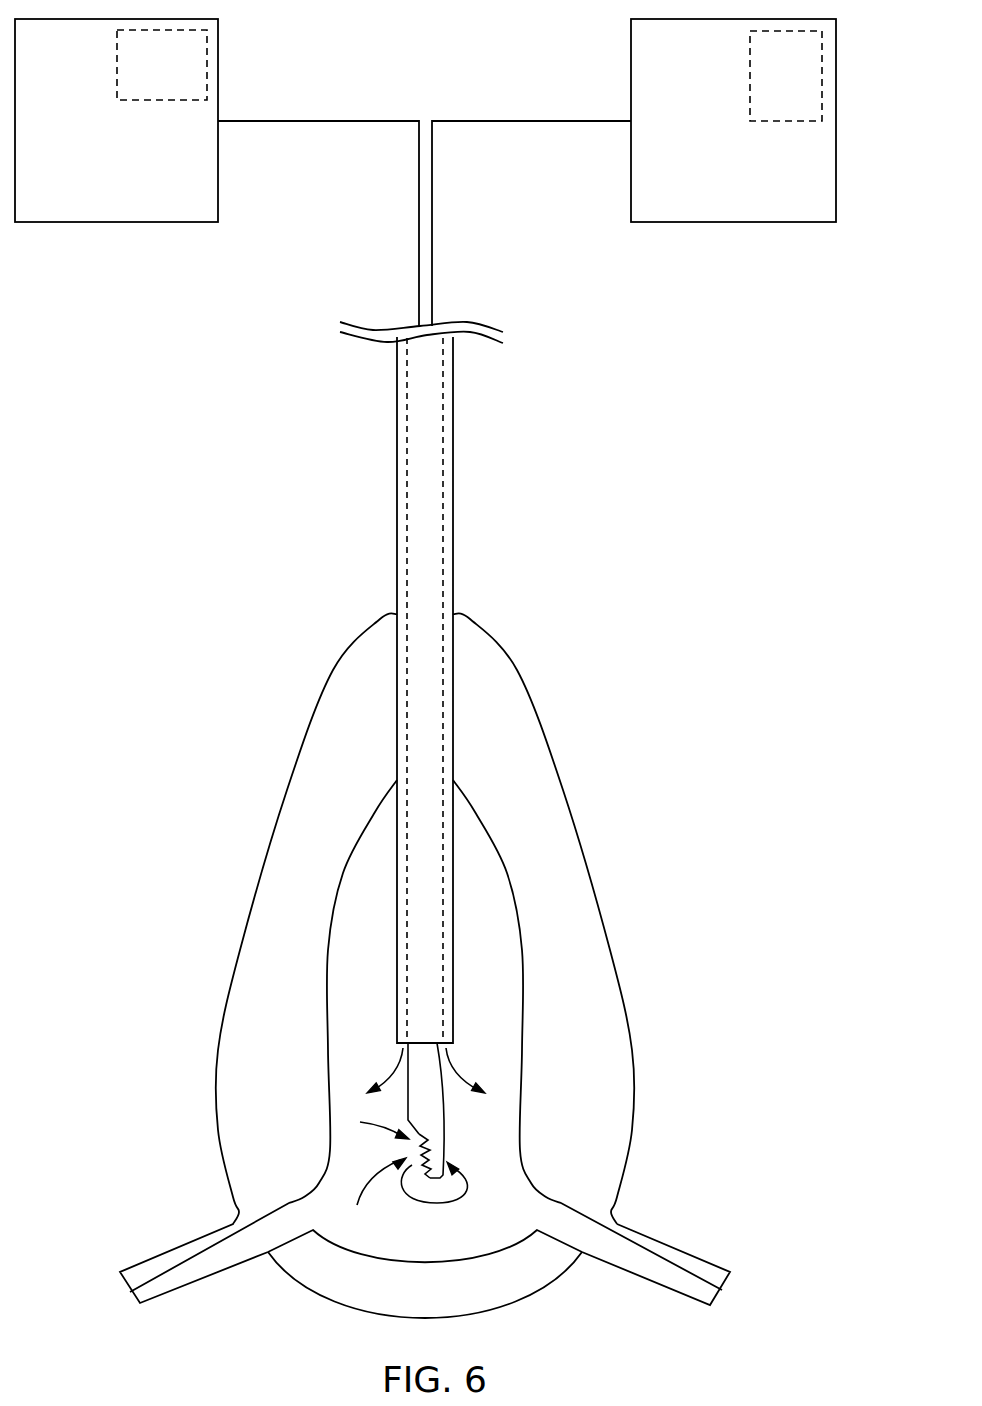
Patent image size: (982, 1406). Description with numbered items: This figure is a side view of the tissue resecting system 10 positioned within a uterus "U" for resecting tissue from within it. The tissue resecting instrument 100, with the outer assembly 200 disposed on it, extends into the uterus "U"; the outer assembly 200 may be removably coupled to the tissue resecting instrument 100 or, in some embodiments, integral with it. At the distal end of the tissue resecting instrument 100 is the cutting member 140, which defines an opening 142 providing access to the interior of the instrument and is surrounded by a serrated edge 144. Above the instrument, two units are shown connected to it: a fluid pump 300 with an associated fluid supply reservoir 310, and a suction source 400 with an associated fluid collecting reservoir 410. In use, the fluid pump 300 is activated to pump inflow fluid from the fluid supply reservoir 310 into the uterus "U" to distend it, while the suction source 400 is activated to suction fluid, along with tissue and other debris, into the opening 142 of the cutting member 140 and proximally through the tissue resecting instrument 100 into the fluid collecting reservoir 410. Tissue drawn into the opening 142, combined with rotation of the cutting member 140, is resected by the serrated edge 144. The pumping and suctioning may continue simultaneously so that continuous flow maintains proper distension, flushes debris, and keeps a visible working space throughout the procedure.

The tissue resecting system 10 is at (545, 456).
The tissue resecting instrument 100 is at (453, 415).
The cutting member 140 is at (446, 1121).
The opening 142 is at (420, 1158).
The serrated edge 144 is at (446, 1141).
The outer assembly 200 is at (453, 546).
The fluid pump 300 is at (732, 224).
The fluid supply reservoir 310 is at (800, 97).
The suction source 400 is at (98, 224).
The fluid collecting reservoir 410 is at (173, 63).
The uterus U is at (490, 923).